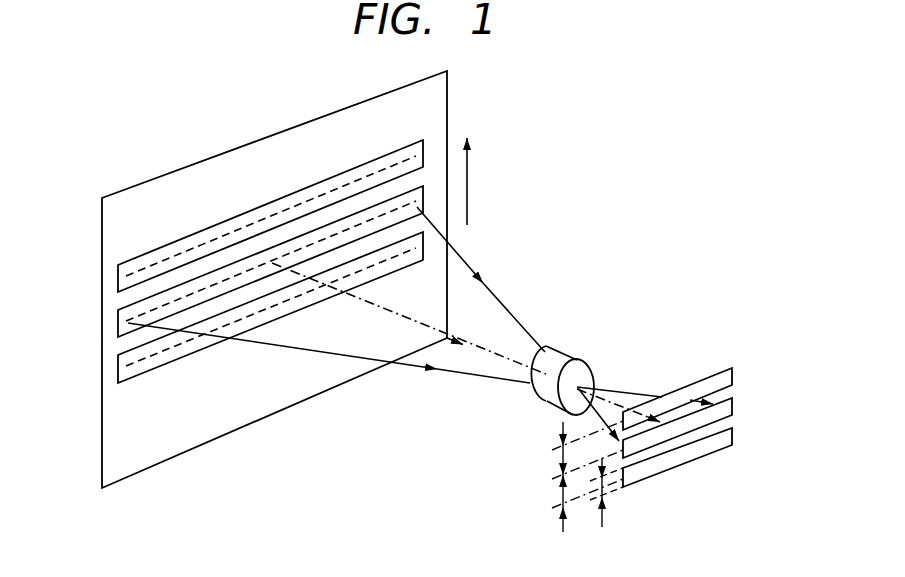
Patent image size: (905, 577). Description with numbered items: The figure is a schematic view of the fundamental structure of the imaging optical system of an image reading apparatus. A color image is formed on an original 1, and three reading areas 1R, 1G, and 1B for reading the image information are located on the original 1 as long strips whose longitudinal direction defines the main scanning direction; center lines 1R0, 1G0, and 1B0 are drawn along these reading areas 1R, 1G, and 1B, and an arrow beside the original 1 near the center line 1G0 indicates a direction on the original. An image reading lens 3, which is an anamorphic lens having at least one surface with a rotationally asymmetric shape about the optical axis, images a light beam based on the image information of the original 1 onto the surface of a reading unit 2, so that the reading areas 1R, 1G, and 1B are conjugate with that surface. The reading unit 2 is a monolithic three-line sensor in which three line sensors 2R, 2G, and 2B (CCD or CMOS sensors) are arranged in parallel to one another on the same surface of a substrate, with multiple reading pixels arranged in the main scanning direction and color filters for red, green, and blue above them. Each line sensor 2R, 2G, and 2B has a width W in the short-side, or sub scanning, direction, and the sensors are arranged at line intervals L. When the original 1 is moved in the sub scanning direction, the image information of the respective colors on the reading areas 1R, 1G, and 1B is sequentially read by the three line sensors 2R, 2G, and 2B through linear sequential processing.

The original 1 is at (117, 432).
The reading area 1B is at (234, 203).
The reading area 1G is at (285, 263).
The reading area 1R is at (243, 309).
The center line of blue light emitting region 1B0 is at (380, 170).
The center line of green light emitting region 1G0 is at (399, 211).
The center line of red light emitting region 1R0 is at (397, 256).
The image reading lens 3 is at (572, 357).
The reading unit 2 is at (722, 422).
The line sensor 2R is at (734, 373).
The line sensor 2G is at (734, 407).
The line sensor 2B is at (706, 457).
The line interval L is at (562, 459).
The width W is at (611, 494).